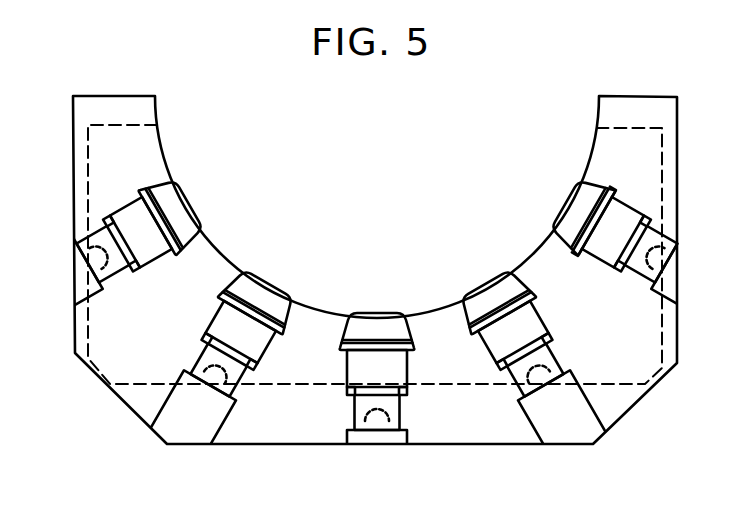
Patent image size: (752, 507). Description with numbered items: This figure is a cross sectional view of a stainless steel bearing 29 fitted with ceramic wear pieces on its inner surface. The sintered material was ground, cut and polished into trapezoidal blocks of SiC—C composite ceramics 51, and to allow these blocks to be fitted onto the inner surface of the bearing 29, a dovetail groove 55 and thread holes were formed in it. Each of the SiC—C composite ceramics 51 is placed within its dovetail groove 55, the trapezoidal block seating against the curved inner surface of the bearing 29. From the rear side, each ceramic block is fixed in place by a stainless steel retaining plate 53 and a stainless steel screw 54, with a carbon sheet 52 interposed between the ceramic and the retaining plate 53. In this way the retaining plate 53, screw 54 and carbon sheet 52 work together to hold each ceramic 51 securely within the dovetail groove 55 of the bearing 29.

The stainless steel bearing 29 is at (613, 116).
The SiC—C composite ceramics 51 is at (562, 205).
The carbon sheet 52 is at (160, 222).
The stainless steel retaining plate 53 is at (133, 218).
The stainless steel screw 54 is at (201, 357).
The dovetail groove 55 is at (602, 192).